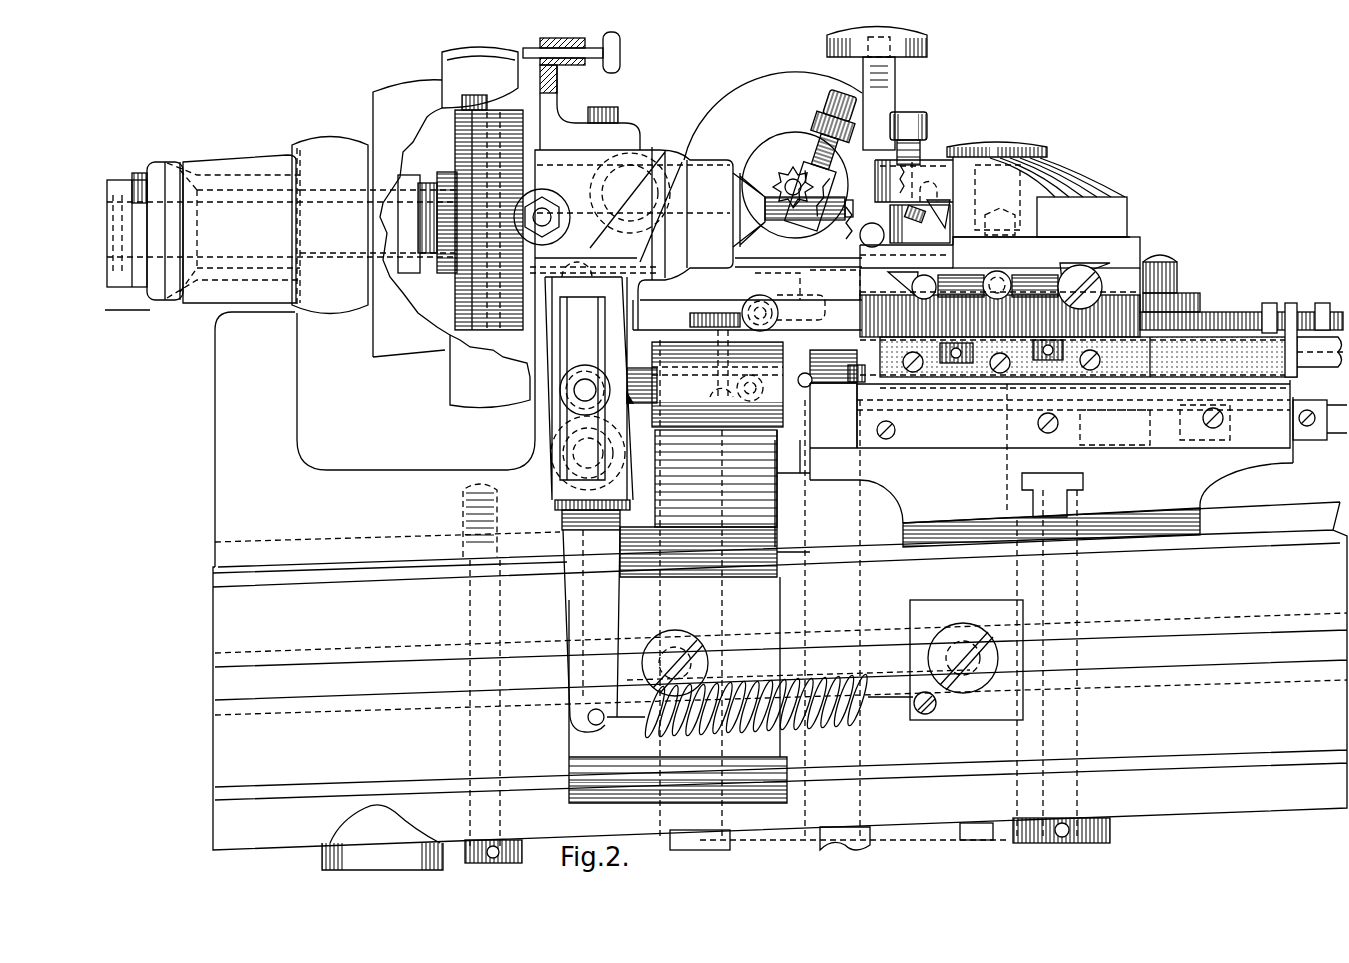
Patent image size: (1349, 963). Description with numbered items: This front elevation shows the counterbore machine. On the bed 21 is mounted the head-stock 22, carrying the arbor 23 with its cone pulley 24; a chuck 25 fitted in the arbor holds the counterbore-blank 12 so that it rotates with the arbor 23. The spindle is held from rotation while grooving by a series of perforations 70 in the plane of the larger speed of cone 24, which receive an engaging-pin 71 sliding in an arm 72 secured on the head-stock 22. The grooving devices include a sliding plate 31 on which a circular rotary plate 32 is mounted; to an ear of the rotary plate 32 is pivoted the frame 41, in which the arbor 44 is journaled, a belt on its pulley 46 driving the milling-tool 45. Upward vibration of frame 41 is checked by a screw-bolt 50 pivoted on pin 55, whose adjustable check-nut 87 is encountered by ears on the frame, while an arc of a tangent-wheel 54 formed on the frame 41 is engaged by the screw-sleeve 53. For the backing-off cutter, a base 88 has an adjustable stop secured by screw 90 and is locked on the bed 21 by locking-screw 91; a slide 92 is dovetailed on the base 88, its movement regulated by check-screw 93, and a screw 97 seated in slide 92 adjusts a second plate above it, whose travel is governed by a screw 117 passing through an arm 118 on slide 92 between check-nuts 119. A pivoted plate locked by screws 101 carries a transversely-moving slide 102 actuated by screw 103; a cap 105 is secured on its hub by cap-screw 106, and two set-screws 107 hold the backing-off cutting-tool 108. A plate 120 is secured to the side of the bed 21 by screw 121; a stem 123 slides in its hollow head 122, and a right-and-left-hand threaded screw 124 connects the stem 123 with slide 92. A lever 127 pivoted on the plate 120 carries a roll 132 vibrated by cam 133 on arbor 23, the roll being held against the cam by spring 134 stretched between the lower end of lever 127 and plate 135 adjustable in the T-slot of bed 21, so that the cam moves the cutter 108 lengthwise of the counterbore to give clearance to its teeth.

The counterbore-blank 12 is at (809, 208).
The bed 21 is at (780, 595).
The head-stock 22 is at (419, 357).
The arbor 23 is at (432, 254).
The cone pulley 24 is at (411, 244).
The chuck 25 is at (749, 210).
The sliding plate 31 is at (747, 315).
The circular rotary plate 32 is at (776, 294).
The frame 41 is at (795, 185).
The arbor 44 is at (801, 184).
The milling-tool 45 is at (792, 187).
The pulley 46 is at (773, 116).
The screw-bolt 50 is at (822, 159).
The screw-sleeve 53 is at (895, 73).
The arc of a tangent-wheel 54 is at (840, 223).
The pin 55 is at (872, 235).
The perforations 70 is at (480, 77).
The engaging-pin 71 is at (571, 57).
The arm 72 is at (589, 94).
The check-nut 87 is at (829, 134).
The base 88 is at (1051, 503).
The screw 90 is at (1052, 495).
The locking-screw 91 is at (1074, 830).
The slide 92 is at (1051, 445).
The check-screw 93 is at (1318, 438).
The screw 97 is at (1305, 369).
The screws 101 is at (1058, 335).
The transversely-moving slide 102 is at (1000, 275).
The screw 103 is at (997, 276).
The cap 105 is at (995, 206).
The cap-screw 106 is at (1036, 160).
The set-screws 107 is at (908, 138).
The backing-off cutting-tool 108 is at (920, 222).
The screw 117 is at (1241, 292).
The arm 118 is at (1290, 331).
The check-nuts 119 is at (1268, 305).
The plate 120 is at (678, 616).
The screw 121 is at (676, 663).
The hollow head 122 is at (717, 378).
The stem 123 is at (642, 385).
The right-and-left-hand threaded screw 124 is at (795, 407).
The lever 127 is at (589, 485).
The roll 132 is at (556, 217).
The cam 133 is at (480, 221).
The spring 134 is at (760, 714).
The plate 135 is at (966, 660).